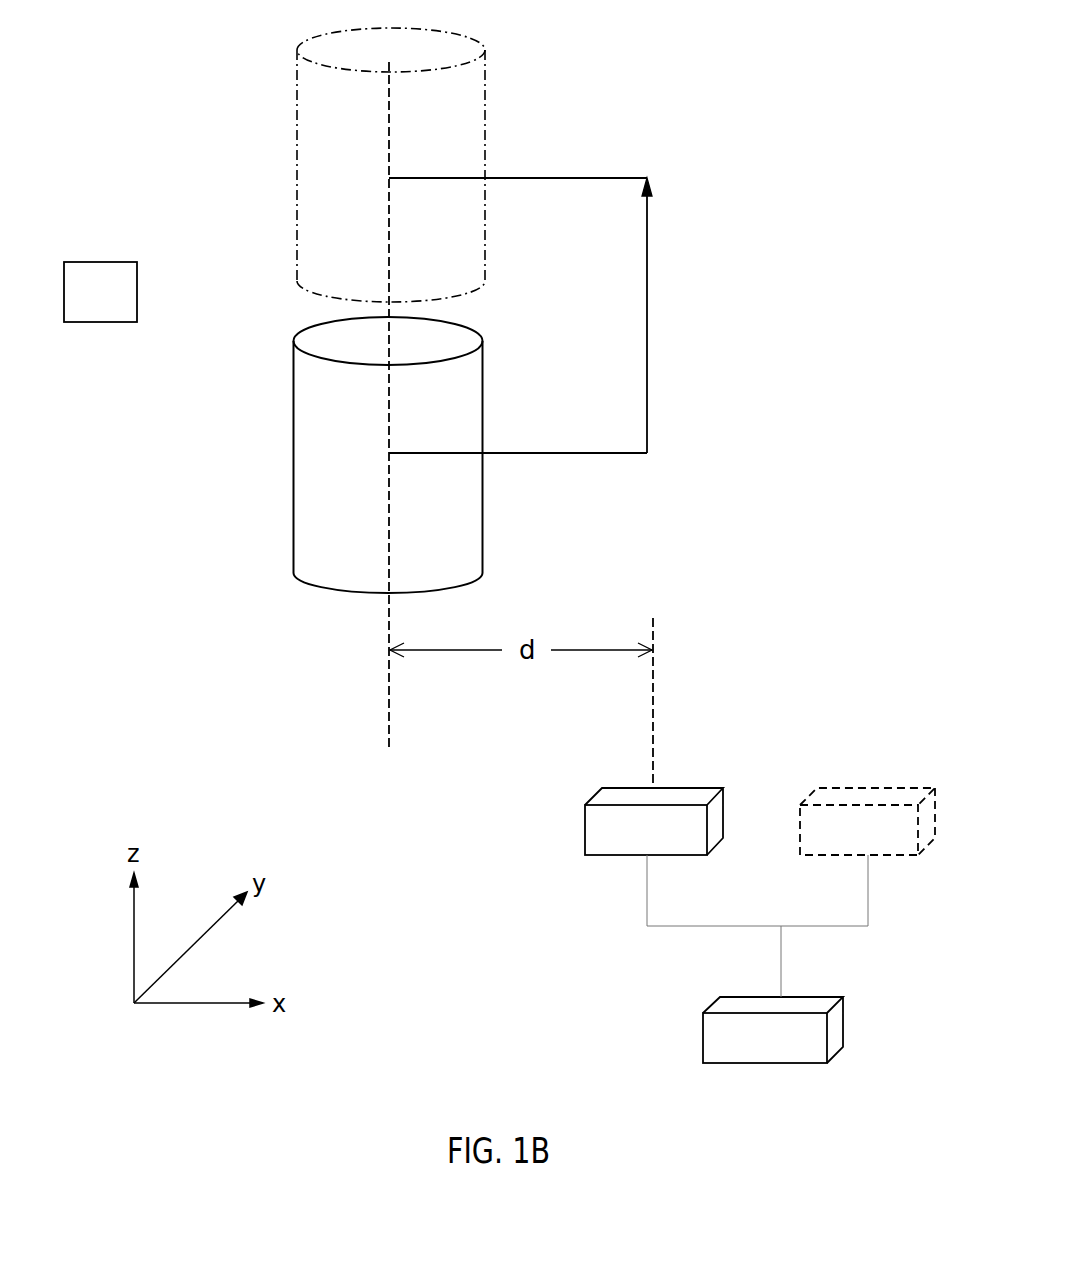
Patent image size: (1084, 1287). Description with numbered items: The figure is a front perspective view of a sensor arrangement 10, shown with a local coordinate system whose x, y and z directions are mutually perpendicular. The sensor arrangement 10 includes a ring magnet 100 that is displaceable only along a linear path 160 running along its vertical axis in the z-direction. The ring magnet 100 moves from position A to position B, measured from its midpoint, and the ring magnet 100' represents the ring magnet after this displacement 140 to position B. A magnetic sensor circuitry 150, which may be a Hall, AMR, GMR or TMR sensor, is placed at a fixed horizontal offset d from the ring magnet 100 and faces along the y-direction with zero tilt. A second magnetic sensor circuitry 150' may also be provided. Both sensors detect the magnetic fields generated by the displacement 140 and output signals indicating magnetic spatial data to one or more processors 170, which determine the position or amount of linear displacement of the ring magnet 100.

The sensor arrangement 10 is at (100, 292).
The ring magnet 100 is at (341, 437).
The ring magnet displaced to position B 100' is at (340, 165).
The displacement 140 is at (647, 353).
The magnetic sensor circuitry 150 is at (654, 821).
The second magnetic sensor circuitry 150' is at (867, 821).
The linear path 160 is at (389, 130).
The processor 170 is at (773, 1030).